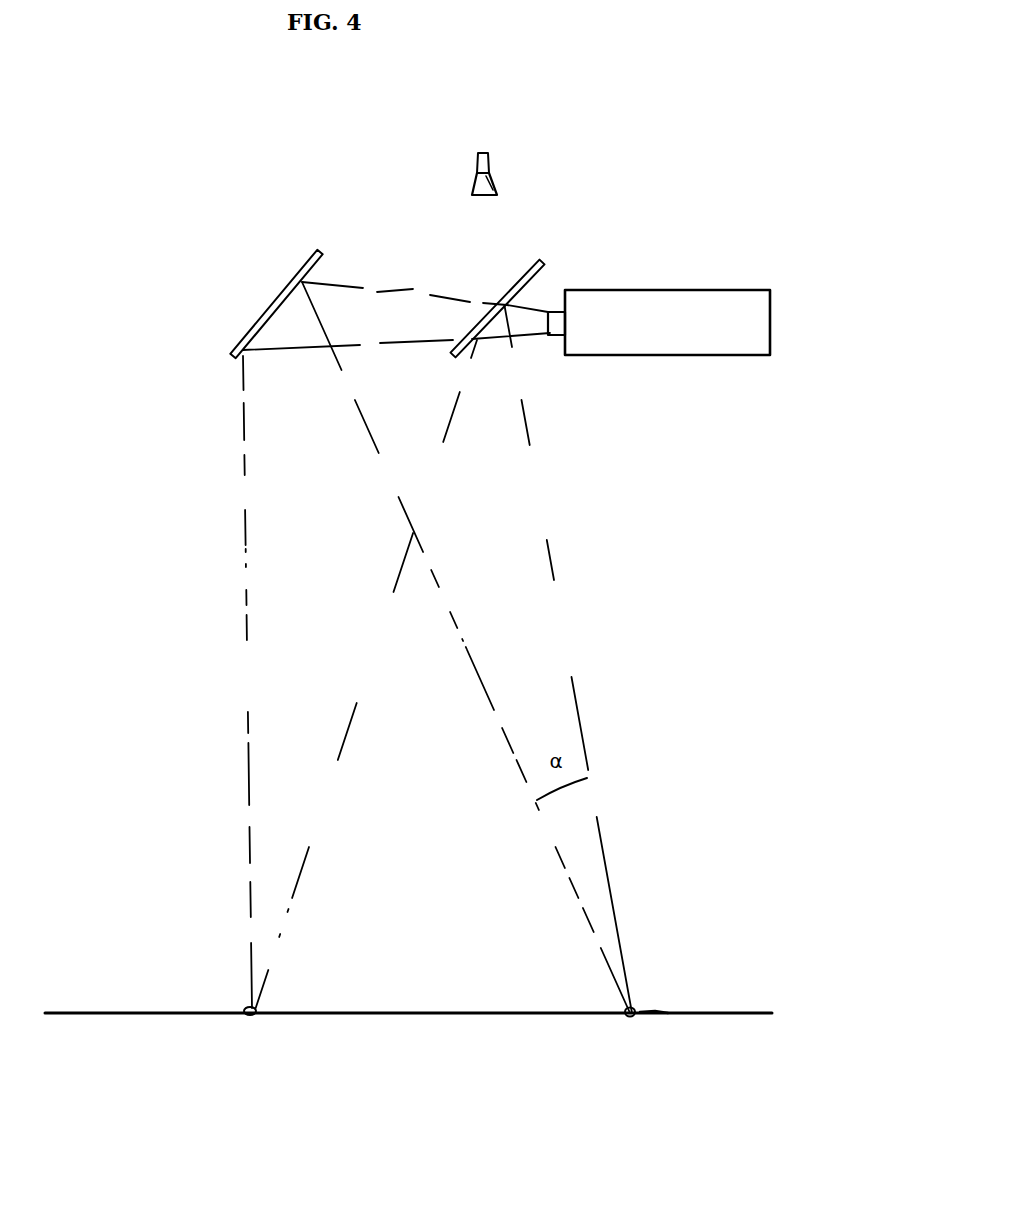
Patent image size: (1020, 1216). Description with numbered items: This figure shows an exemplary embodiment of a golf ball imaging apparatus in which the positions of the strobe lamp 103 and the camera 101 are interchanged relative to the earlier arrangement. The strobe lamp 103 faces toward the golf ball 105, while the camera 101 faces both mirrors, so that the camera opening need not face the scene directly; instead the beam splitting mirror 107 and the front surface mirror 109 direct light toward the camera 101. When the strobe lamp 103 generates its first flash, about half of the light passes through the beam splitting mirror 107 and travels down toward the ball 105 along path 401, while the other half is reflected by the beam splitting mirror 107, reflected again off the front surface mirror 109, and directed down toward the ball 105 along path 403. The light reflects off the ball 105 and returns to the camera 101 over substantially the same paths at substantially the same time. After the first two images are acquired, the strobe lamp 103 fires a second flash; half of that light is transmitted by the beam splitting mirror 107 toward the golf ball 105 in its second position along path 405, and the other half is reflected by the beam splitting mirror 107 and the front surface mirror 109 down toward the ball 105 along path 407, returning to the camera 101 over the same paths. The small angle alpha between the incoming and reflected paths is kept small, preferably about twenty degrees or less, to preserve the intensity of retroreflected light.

The camera 101 is at (738, 366).
The strobe lamp 103 is at (470, 143).
The golf ball 105 is at (242, 1028).
The beam splitting mirror 107 is at (540, 250).
The front surface mirror 109 is at (295, 258).
The path 401 is at (593, 710).
The path 403 is at (392, 280).
The path 405 is at (357, 730).
The path 407 is at (297, 370).